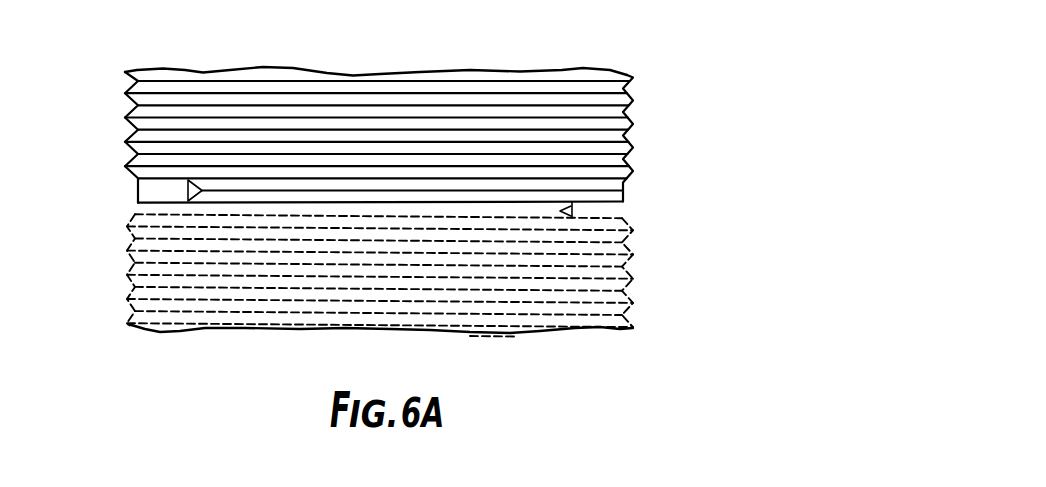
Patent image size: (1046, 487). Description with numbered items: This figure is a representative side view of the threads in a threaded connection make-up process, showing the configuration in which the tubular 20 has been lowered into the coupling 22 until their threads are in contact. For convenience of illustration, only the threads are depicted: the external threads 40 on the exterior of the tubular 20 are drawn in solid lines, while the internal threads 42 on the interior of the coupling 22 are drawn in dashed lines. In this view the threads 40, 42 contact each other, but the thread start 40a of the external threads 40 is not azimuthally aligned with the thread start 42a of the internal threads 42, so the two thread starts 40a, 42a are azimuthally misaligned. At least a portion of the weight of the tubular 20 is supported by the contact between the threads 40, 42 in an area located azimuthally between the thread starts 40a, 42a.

The tubular 20 is at (562, 70).
The coupling 22 is at (533, 334).
The threads 40 is at (634, 126).
The thread start 40a is at (188, 192).
The threads 42 is at (634, 258).
The thread start 42a is at (572, 210).